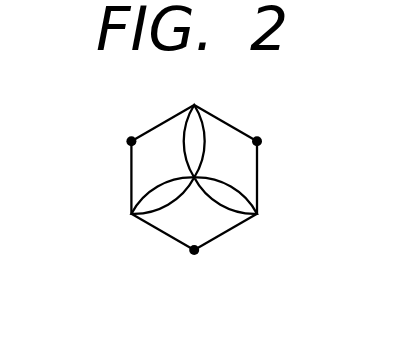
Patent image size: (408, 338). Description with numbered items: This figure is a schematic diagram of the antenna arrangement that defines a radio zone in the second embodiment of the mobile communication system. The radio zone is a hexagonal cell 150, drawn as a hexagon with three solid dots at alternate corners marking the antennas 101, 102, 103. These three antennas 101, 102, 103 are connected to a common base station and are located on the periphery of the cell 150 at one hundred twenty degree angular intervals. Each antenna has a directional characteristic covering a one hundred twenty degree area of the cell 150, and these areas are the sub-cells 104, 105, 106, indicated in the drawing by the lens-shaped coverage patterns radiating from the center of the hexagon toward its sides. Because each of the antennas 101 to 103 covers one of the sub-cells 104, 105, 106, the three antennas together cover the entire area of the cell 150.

The antenna 101 is at (195, 255).
The antenna 102 is at (128, 140).
The antenna 103 is at (260, 139).
The sub-cell 104 is at (166, 228).
The sub-cell 105 is at (137, 169).
The sub-cell 106 is at (252, 172).
The hexagonal cell 150 is at (231, 227).